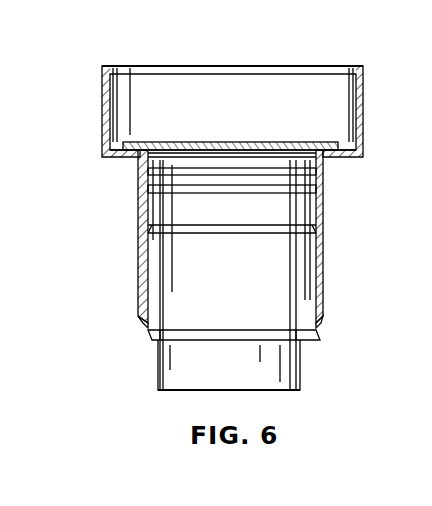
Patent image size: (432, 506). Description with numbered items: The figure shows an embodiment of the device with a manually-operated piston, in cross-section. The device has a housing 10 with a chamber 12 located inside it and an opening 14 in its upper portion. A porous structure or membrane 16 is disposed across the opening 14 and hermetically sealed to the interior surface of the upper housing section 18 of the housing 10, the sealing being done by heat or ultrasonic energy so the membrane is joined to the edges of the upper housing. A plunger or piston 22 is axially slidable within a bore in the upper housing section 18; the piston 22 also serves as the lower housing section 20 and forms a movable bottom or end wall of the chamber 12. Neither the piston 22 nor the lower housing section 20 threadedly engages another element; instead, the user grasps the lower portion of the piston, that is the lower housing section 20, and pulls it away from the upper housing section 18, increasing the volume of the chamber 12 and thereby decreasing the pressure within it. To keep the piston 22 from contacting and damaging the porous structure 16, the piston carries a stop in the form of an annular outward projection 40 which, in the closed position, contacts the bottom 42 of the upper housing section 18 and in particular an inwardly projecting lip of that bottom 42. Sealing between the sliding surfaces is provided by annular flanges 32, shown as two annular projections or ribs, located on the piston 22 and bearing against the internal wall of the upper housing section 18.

The housing 10 is at (126, 222).
The chamber 12 is at (240, 158).
The opening 14 is at (185, 130).
The porous structure or membrane 16 is at (286, 142).
The upper housing section 18 is at (101, 103).
The lower housing section 20 is at (158, 376).
The piston 22 is at (278, 292).
The annular flanges 32 is at (313, 190).
The annular outward projection 40 is at (152, 336).
The bottom 42 is at (147, 330).